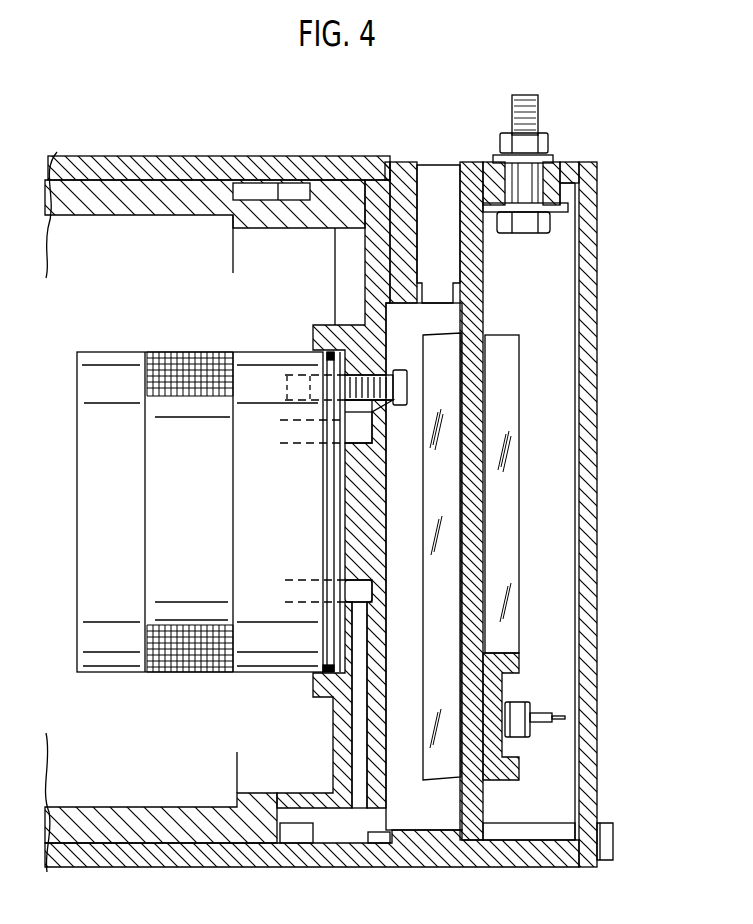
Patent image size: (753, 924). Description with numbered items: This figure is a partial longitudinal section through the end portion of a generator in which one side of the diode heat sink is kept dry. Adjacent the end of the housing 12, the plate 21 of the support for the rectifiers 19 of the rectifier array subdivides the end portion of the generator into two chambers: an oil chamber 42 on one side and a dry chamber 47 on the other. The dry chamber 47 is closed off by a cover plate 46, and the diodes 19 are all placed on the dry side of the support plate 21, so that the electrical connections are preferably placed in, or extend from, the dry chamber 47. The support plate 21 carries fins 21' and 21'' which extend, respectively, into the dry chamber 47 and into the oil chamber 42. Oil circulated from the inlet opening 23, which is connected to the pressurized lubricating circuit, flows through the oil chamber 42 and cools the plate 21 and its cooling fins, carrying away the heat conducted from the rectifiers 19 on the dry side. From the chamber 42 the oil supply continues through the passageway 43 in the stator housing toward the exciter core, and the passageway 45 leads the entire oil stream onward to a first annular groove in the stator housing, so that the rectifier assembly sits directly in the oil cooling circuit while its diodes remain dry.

The housing 12 is at (271, 170).
The inlet opening 23 is at (435, 186).
The oil chamber 42 is at (441, 323).
The passageway 43 is at (359, 431).
The support plate 21 is at (482, 556).
The cooling fins 21' is at (430, 556).
The fins 21'' is at (524, 494).
The rectifiers 19 is at (521, 713).
The passageway 45 is at (332, 825).
The cover plate 46 is at (587, 403).
The dry chamber 47 is at (554, 342).